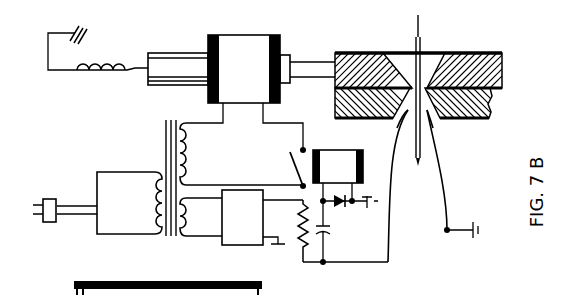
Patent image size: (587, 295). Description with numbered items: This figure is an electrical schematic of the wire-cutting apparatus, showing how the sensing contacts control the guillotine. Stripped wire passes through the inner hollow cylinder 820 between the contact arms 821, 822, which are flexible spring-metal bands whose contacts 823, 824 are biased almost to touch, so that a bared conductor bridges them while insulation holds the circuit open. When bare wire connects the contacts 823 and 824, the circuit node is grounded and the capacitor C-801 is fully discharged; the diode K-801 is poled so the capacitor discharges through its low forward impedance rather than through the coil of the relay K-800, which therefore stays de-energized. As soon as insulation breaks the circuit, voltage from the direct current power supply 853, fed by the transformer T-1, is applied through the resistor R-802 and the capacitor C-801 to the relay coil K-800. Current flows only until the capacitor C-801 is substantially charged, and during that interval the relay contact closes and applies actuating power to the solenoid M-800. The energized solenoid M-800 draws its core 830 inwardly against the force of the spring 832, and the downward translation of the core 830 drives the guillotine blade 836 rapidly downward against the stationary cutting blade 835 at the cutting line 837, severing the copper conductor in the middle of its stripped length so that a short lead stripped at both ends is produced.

The core 830 is at (172, 62).
The spring 832 is at (115, 77).
The solenoid M-800 is at (255, 90).
The relay K-800 is at (335, 155).
The transformer T-1 is at (164, 171).
The inner hollow cylinder 820 is at (294, 164).
The direct current power supply 853 is at (223, 244).
The resistor R-802 is at (297, 233).
The capacitor C-801 is at (338, 214).
The diode K-801 is at (345, 205).
The contact arm 821 is at (390, 190).
The contact arm 822 is at (443, 190).
The contact 823 is at (403, 113).
The contact 824 is at (438, 116).
The stationary cutting blade 835 is at (490, 104).
The guillotine blade 836 is at (463, 55).
The cutting line 837 is at (540, 89).